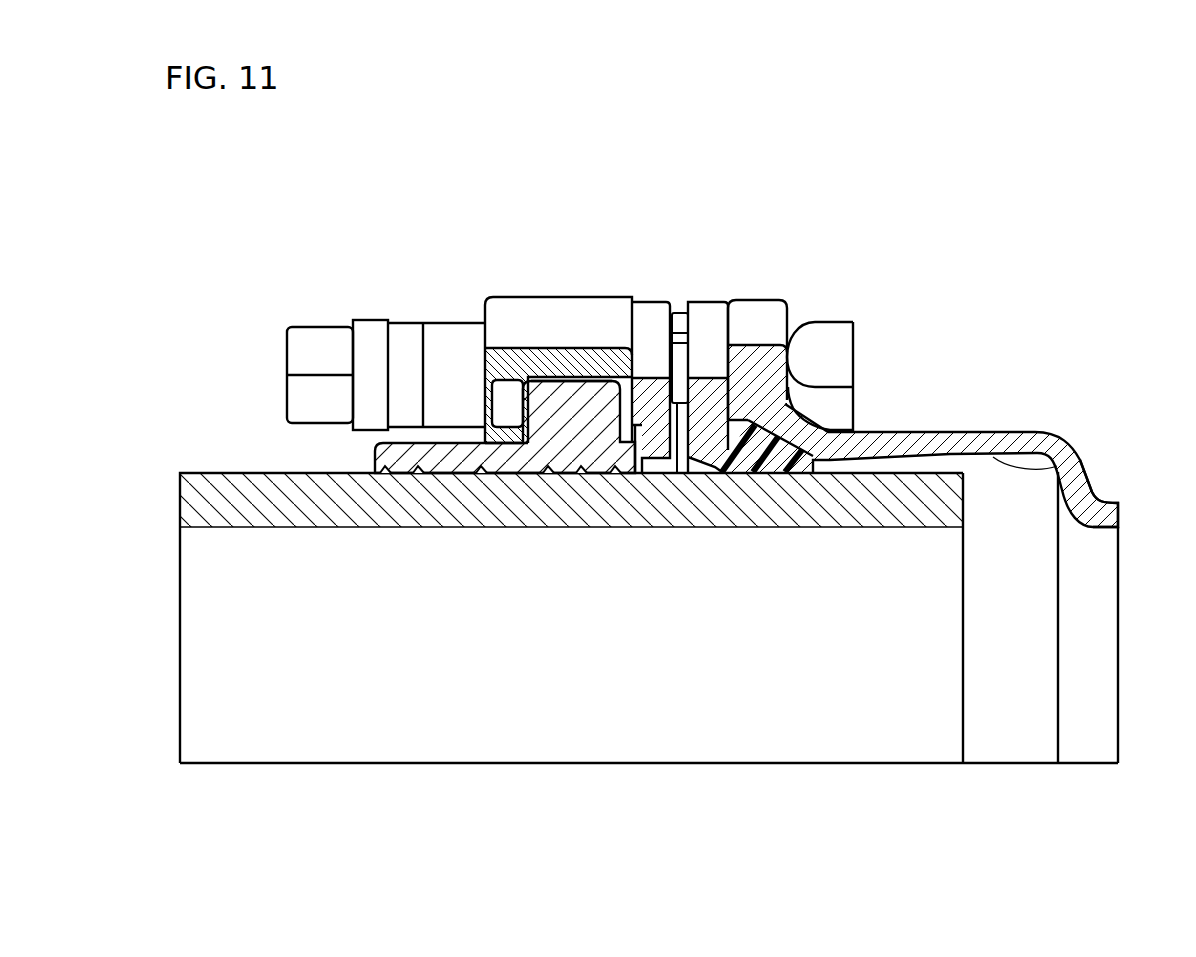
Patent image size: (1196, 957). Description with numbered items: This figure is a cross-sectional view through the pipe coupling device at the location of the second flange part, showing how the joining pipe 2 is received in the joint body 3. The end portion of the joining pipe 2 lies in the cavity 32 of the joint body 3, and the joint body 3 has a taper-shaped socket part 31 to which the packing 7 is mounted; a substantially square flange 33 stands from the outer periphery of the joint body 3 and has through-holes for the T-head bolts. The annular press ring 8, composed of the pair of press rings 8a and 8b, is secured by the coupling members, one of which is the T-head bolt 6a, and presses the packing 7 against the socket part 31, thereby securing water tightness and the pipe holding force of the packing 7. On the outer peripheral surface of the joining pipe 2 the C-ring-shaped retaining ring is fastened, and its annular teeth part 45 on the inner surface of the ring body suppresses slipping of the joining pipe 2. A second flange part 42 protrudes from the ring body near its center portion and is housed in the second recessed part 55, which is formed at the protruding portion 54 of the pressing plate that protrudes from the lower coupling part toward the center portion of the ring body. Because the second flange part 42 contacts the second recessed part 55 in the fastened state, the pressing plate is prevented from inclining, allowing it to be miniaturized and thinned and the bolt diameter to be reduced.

The joining pipe 2 is at (963, 628).
The joint body 3 is at (958, 432).
The T-head bolt 6a is at (843, 340).
The packing 7 is at (742, 475).
The press ring 8 is at (755, 181).
The press ring 8a is at (708, 302).
The press ring 8b is at (649, 302).
The socket part 31 is at (773, 475).
The cavity 32 is at (1087, 448).
The flange 33 is at (757, 303).
The second flange part 42 is at (548, 372).
The annular teeth part 45 is at (530, 475).
The protruding portion 54 is at (486, 303).
The second recessed part 55 is at (600, 382).